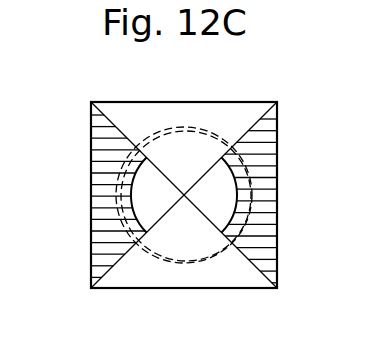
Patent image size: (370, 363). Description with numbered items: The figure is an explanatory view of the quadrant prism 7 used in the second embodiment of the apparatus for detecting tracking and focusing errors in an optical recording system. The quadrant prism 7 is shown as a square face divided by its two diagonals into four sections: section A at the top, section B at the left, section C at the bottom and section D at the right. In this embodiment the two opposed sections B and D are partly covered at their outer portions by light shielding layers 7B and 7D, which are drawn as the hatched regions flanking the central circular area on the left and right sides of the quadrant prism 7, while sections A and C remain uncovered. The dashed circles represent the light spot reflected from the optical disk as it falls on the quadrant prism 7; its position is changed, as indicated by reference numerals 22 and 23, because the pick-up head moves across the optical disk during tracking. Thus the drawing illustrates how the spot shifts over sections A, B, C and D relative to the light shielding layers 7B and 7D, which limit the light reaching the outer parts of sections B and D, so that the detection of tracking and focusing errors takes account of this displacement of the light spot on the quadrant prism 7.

The quadrant prism 7 is at (234, 101).
The light shielding layer 7B is at (103, 224).
The light shielding layer 7D is at (268, 226).
The light spot position 22 is at (133, 152).
The light spot position 23 is at (266, 213).
The section A of quadrant prism A is at (157, 101).
The section B of quadrant prism B is at (140, 178).
The section C of quadrant prism C is at (143, 272).
The section D of quadrant prism D is at (250, 182).